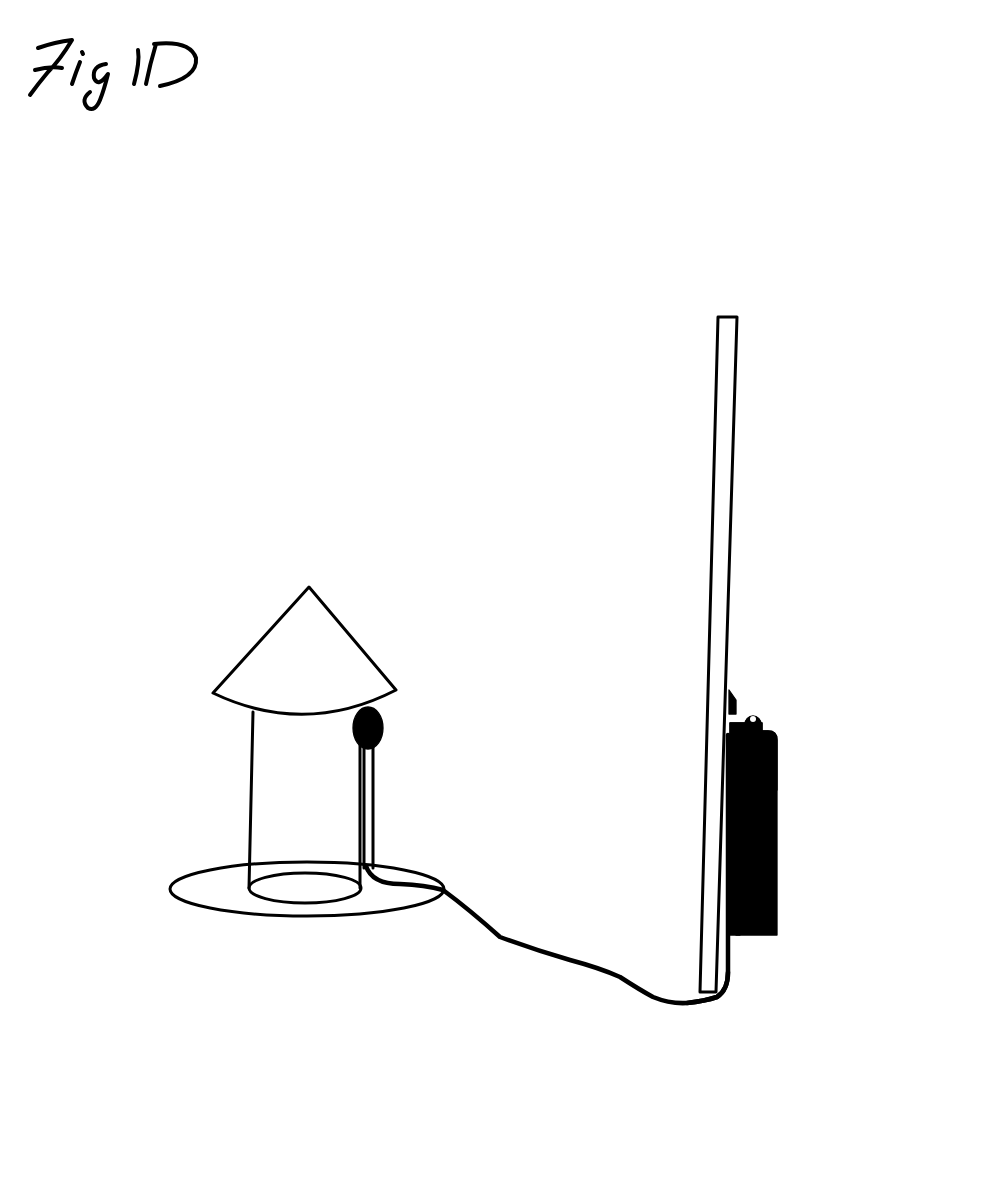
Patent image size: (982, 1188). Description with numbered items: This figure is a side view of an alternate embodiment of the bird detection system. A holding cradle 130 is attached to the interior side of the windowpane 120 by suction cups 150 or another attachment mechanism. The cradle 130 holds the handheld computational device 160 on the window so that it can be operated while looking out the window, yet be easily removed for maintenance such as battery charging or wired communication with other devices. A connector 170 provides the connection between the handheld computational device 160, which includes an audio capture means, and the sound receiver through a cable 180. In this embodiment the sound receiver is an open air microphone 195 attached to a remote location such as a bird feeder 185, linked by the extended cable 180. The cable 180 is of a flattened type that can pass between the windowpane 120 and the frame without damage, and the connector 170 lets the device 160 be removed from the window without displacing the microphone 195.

The windowpane 120 is at (744, 654).
The holding cradle 130 is at (811, 775).
The suction cups 150 is at (701, 816).
The handheld computational device 160 is at (775, 763).
The connector 170 is at (768, 722).
The microphone cable 180 is at (732, 985).
The bird feeder 185 is at (304, 650).
The open air microphone 195 is at (393, 726).